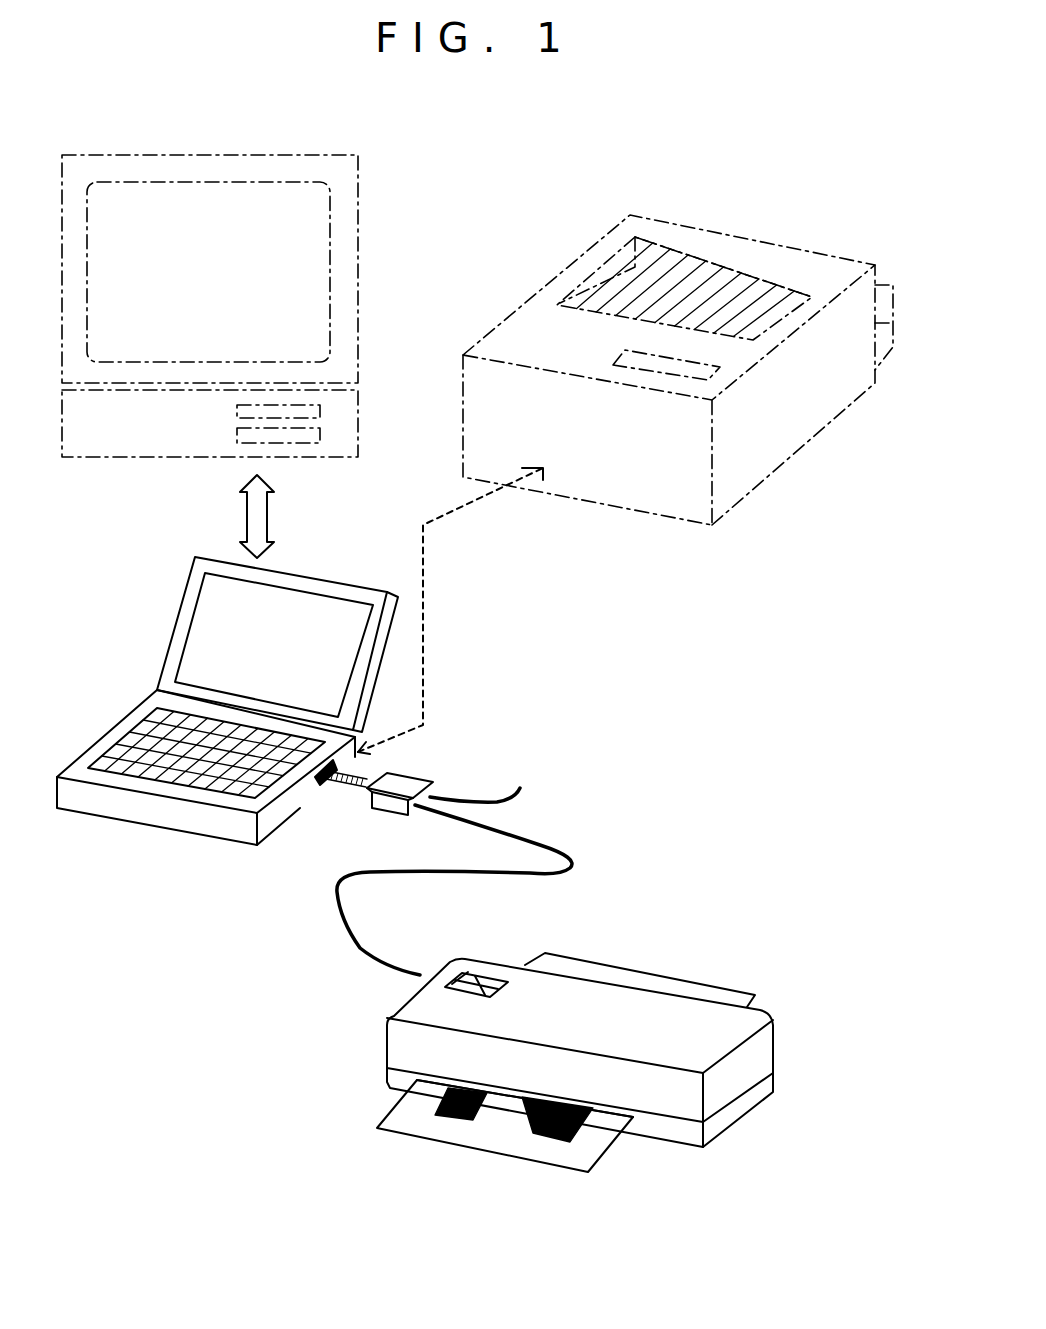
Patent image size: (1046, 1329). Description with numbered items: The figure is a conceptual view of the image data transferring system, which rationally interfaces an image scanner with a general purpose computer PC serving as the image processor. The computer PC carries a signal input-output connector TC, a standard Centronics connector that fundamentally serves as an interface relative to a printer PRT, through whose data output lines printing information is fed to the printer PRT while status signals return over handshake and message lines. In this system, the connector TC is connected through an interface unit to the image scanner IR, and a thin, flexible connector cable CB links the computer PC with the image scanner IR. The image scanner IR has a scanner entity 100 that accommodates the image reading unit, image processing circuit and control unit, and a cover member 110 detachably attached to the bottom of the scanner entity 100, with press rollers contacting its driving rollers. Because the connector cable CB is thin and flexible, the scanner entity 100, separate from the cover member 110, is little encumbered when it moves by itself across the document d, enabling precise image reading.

The personal computer PC is at (112, 457).
The printer PRT is at (720, 235).
The signal input-output connector TC is at (328, 788).
The connector cable CB is at (550, 874).
The image scanner IR is at (495, 1050).
The scanner entity 100 is at (387, 1047).
The cover member 110 is at (387, 1083).
The document d is at (438, 1147).